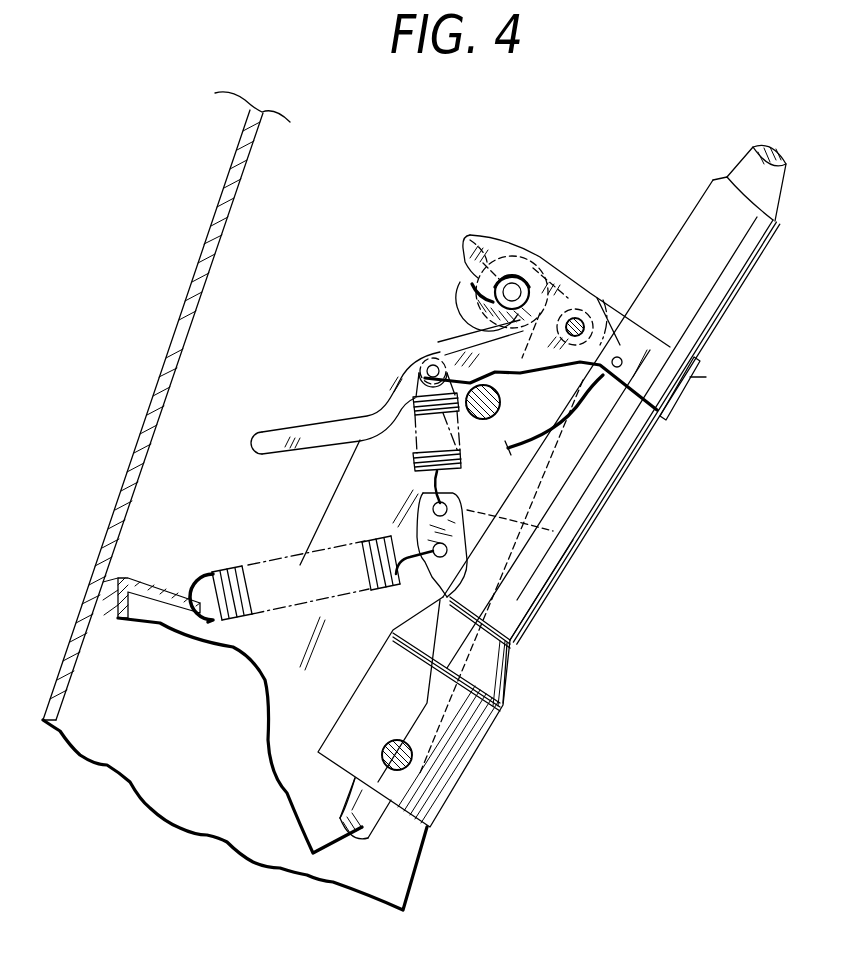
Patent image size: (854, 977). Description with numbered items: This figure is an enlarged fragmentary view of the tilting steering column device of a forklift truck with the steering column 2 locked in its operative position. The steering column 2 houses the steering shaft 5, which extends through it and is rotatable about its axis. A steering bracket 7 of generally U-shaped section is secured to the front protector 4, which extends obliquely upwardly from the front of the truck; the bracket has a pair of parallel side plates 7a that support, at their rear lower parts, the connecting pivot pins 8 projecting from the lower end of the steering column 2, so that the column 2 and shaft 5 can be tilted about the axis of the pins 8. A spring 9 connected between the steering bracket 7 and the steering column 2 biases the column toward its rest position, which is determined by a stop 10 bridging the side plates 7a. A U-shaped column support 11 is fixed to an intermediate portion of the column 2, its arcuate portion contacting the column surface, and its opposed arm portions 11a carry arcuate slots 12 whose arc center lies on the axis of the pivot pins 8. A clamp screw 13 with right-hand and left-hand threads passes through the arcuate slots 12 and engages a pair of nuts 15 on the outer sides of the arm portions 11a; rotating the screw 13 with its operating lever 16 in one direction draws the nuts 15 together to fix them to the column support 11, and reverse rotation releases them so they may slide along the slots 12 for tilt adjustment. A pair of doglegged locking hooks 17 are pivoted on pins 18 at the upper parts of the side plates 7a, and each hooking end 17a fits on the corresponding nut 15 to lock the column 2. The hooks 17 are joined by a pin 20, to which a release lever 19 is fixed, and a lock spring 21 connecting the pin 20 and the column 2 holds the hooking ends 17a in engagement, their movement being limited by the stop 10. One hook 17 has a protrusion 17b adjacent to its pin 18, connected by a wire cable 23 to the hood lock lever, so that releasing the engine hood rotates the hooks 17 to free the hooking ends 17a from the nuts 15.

The steering column 2 is at (737, 258).
The front protector 4 is at (163, 392).
The steering shaft 5 is at (357, 826).
The steering bracket 7 is at (100, 643).
The side plate 7a is at (320, 540).
The connecting pivot pin 8 is at (410, 763).
The spring 9 is at (222, 568).
The stop 10 is at (500, 410).
The column support 11 is at (690, 377).
The arm portion 11a is at (667, 387).
The arcuate slot 12 is at (475, 290).
The clamp screw 13 is at (517, 287).
The nut 15 is at (510, 273).
The operating lever 16 is at (553, 531).
The locking hook 17 is at (567, 280).
The hooking end 17a is at (483, 253).
The protrusion 17b is at (618, 352).
The pin 18 is at (581, 320).
The release lever 19 is at (290, 432).
The pin 20 is at (430, 365).
The lock spring 21 is at (413, 463).
The wire cable 23 is at (625, 422).